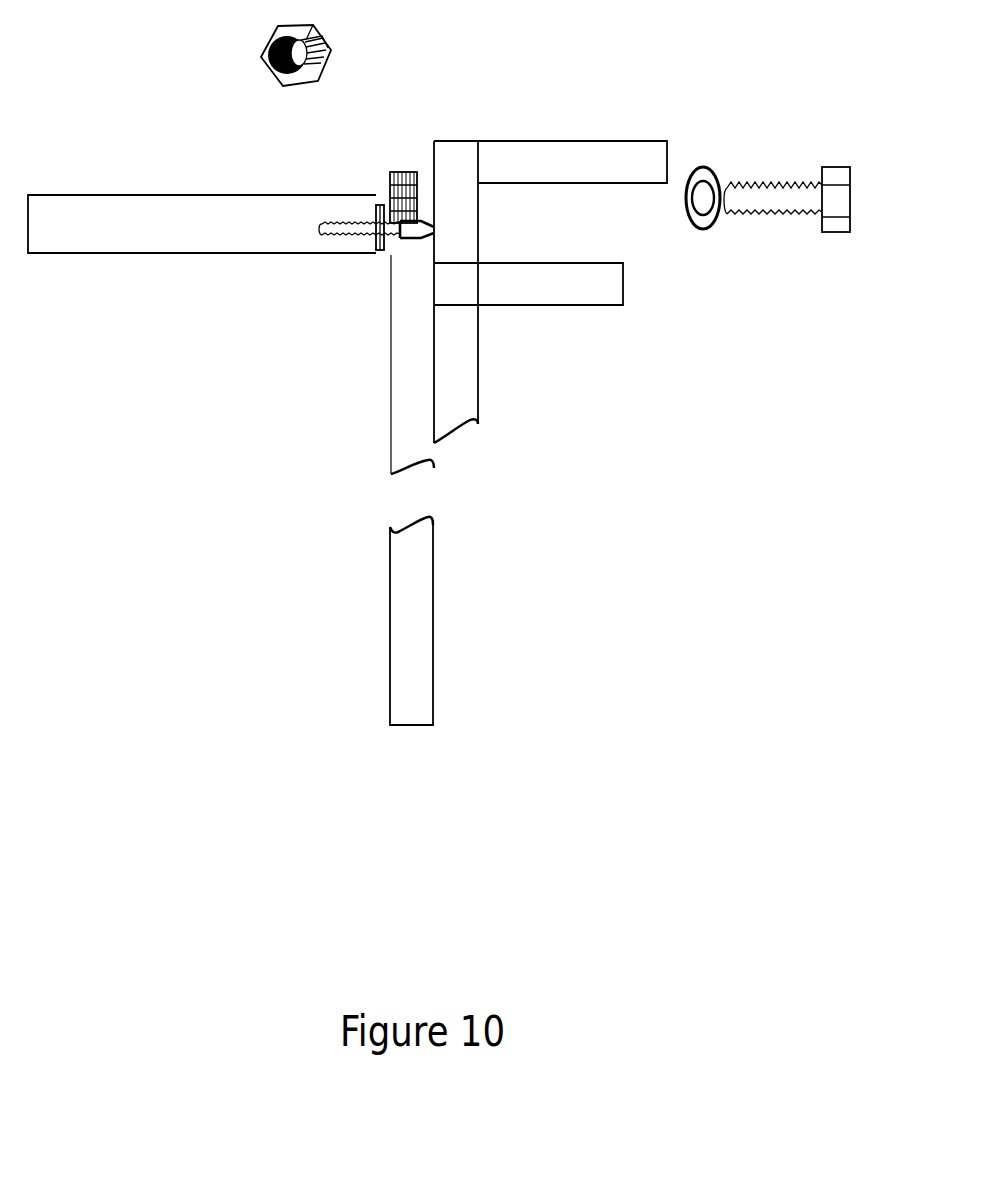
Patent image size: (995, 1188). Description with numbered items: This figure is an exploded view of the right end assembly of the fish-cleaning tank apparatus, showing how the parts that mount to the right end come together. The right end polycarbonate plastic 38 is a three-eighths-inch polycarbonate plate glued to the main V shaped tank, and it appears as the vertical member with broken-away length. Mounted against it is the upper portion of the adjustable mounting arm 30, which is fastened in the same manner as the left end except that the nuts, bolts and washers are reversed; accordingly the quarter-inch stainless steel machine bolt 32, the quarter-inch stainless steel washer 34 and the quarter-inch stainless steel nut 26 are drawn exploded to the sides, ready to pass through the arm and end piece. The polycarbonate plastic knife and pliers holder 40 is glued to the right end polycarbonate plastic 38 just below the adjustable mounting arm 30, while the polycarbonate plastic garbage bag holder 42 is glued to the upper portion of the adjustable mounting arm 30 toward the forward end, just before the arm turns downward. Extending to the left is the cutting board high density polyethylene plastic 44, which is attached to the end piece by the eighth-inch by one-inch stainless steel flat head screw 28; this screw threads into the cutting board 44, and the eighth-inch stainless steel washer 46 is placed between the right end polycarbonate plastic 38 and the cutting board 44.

The ¼" stainless steel nut 26 is at (406, 172).
The ⅛"x1" stainless steel flat head screw 28 is at (370, 226).
The upper portion of left end adjustable mounting arm 30 is at (457, 162).
The ¼"x¾" stainless steel machine bolt 32 is at (832, 177).
The ¼" stainless steel washer 34 is at (700, 177).
The right end polycarbonate plastic 38 is at (415, 437).
The polycarbonate plastic knife and pliers holder 40 is at (574, 283).
The polycarbonate plastic garbage bag holder 42 is at (566, 170).
The cutting board high density polyethylene plastic 44 is at (195, 227).
The ⅛" stainless steel washer 46 is at (382, 205).